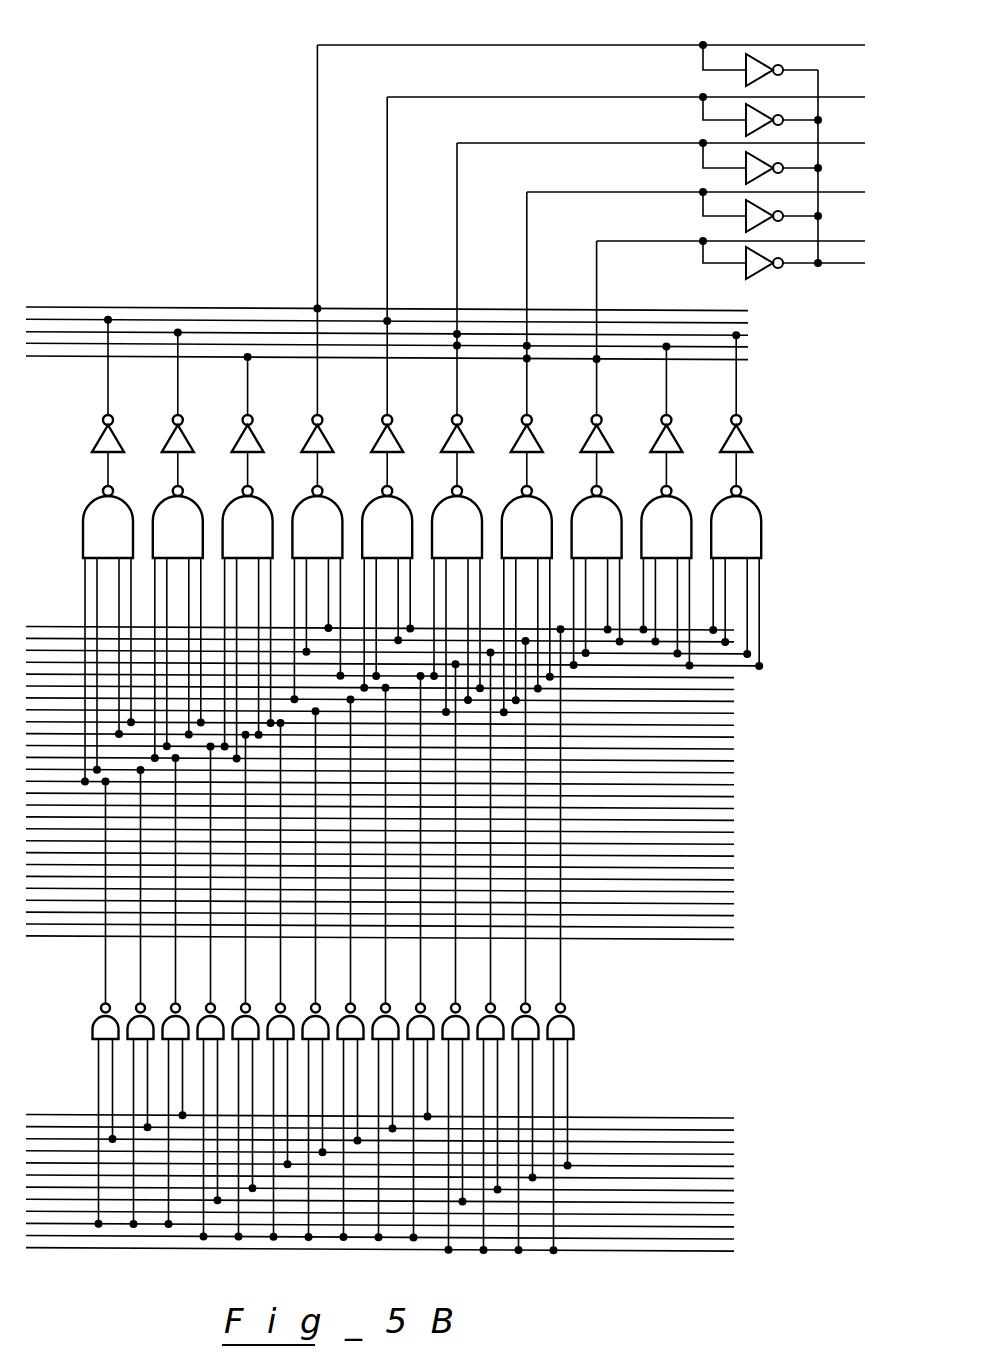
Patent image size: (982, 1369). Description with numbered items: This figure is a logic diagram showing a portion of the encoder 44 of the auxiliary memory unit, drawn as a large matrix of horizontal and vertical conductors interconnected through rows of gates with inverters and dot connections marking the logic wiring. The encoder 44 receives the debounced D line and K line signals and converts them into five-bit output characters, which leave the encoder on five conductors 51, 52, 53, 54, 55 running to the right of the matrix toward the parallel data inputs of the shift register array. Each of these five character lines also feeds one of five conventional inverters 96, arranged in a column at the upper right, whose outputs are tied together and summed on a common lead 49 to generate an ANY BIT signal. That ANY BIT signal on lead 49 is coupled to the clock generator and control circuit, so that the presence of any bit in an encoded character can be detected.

The encoder 44 is at (152, 286).
The lead 49 is at (830, 263).
The conductor 51 is at (833, 45).
The conductor 52 is at (833, 97).
The conductor 53 is at (833, 143).
The conductor 54 is at (835, 192).
The conductor 55 is at (835, 241).
The inverters 96 is at (746, 82).